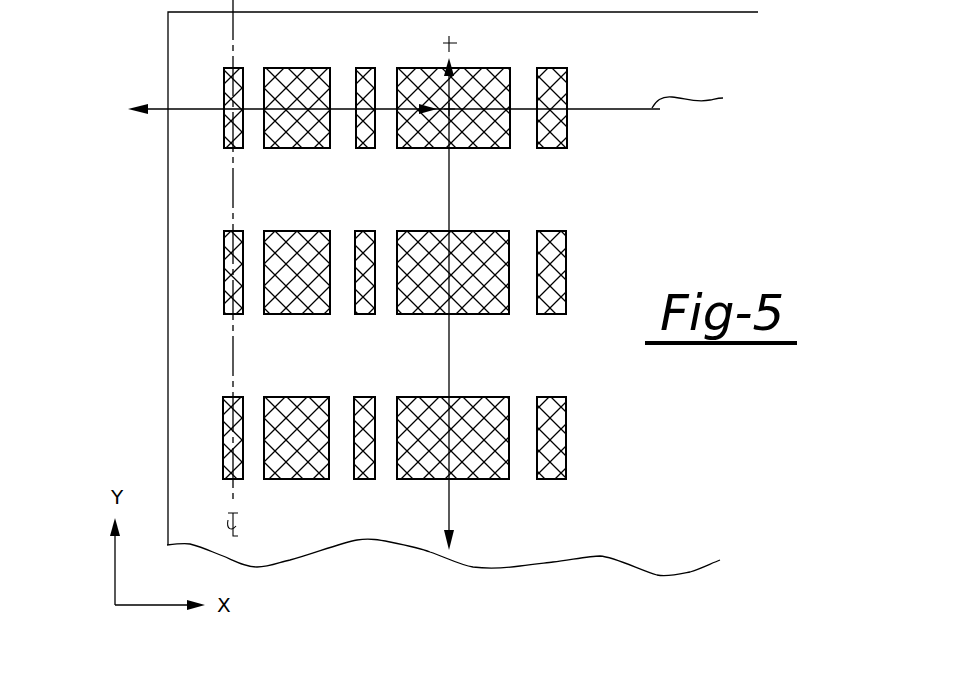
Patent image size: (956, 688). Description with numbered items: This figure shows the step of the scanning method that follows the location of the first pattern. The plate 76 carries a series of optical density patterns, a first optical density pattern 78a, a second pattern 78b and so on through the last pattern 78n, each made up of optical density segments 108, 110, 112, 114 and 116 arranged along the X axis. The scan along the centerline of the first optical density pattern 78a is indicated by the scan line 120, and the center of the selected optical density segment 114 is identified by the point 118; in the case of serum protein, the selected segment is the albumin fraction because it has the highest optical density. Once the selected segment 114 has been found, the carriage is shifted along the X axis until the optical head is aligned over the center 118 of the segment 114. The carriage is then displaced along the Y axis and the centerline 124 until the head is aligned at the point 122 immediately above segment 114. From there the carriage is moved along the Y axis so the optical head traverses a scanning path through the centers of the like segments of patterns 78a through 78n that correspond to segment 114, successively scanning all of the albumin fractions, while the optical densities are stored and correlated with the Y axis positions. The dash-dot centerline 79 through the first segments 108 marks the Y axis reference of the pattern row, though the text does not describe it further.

The plate 76 is at (170, 38).
The first optical density pattern 78a is at (363, 131).
The second optical density pattern 78b is at (206, 268).
The last optical density pattern 78n is at (204, 429).
The centerline 79 is at (236, 494).
The optical segment 108 is at (227, 150).
The optical segment 110 is at (282, 148).
The optical segment 112 is at (360, 148).
The selected optical density segment 114 is at (401, 148).
The optical segment 116 is at (545, 148).
The center of the selected optical segment 118 is at (452, 107).
The scan along the centerline of the first pattern 120 is at (190, 108).
The point immediately above the segment 122 is at (447, 42).
The centerline 124 is at (450, 222).